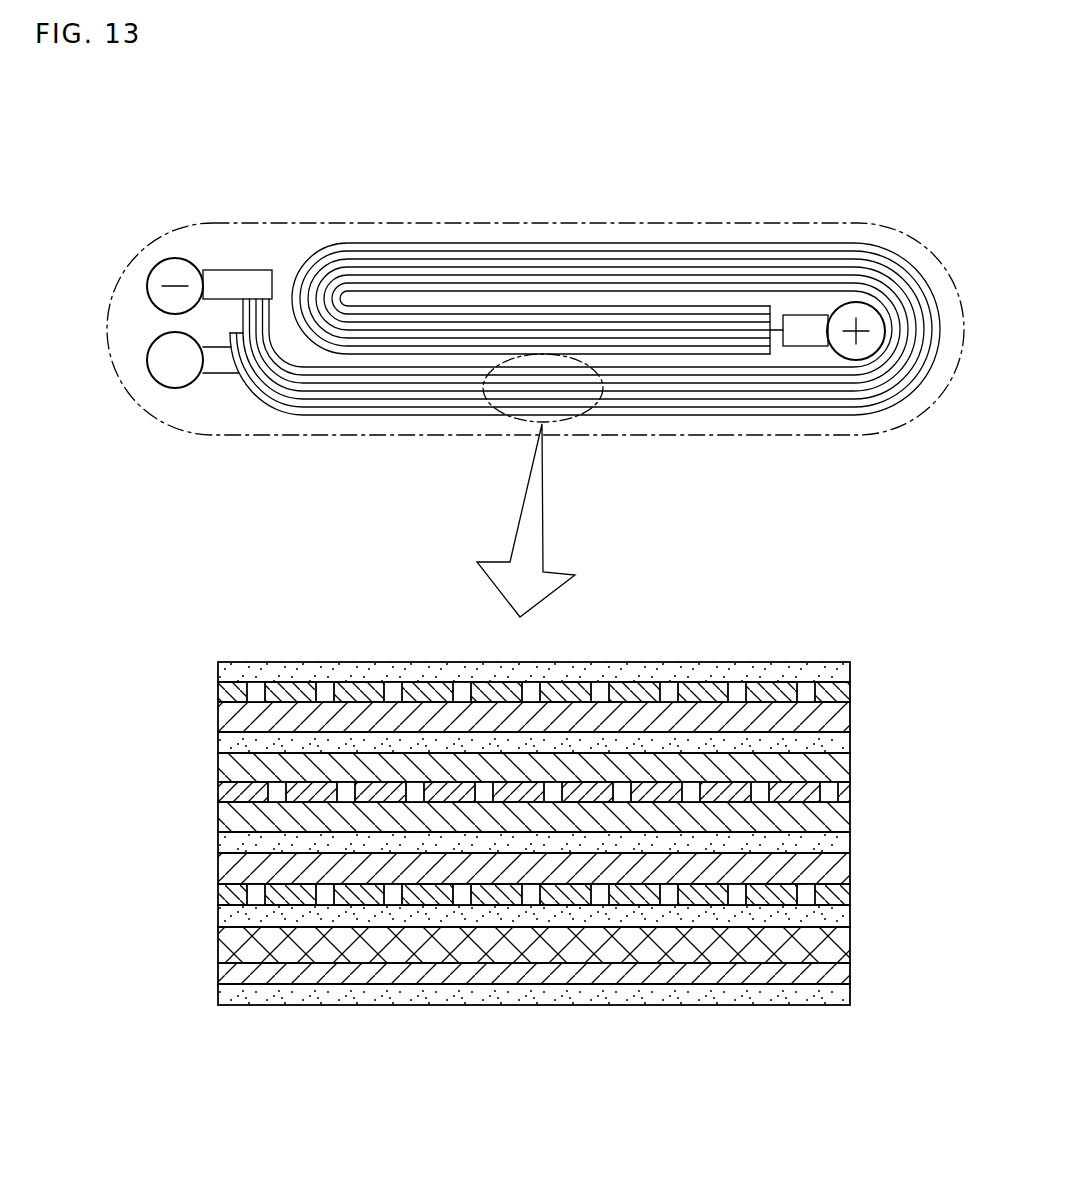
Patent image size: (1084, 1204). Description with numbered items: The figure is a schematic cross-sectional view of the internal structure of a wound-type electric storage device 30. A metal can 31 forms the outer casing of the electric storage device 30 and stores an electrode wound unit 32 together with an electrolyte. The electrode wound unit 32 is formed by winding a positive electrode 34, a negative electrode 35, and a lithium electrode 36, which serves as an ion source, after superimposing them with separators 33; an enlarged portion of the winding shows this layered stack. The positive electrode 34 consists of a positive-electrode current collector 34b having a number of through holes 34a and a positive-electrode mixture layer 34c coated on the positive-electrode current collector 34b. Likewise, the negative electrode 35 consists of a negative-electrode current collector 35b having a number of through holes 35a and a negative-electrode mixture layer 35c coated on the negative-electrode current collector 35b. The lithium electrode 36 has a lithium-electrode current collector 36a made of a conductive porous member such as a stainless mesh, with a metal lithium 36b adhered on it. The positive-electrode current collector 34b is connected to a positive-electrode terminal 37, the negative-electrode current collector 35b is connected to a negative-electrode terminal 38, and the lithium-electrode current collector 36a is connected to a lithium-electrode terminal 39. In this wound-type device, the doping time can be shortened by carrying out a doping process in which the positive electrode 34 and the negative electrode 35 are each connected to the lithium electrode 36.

The wound-type electric storage device 30 is at (748, 172).
The metal can 31 is at (376, 222).
The electrode wound unit 32 is at (298, 421).
The separators 33 is at (838, 668).
The positive electrode 34 is at (131, 747).
The through holes 34a is at (277, 790).
The positive-electrode current collector 34b is at (232, 792).
The positive-electrode mixture layer 34c is at (232, 764).
The negative electrode 35 is at (131, 674).
The through holes 35a is at (394, 688).
The negative-electrode current collector 35b is at (230, 692).
The negative-electrode mixture layer 35c is at (228, 718).
The lithium electrode 36 is at (131, 928).
The lithium-electrode current collector 36a is at (232, 972).
The metal lithium 36b is at (232, 942).
The positive-electrode terminal 37 is at (856, 301).
The negative-electrode terminal 38 is at (176, 257).
The lithium-electrode terminal 39 is at (176, 389).